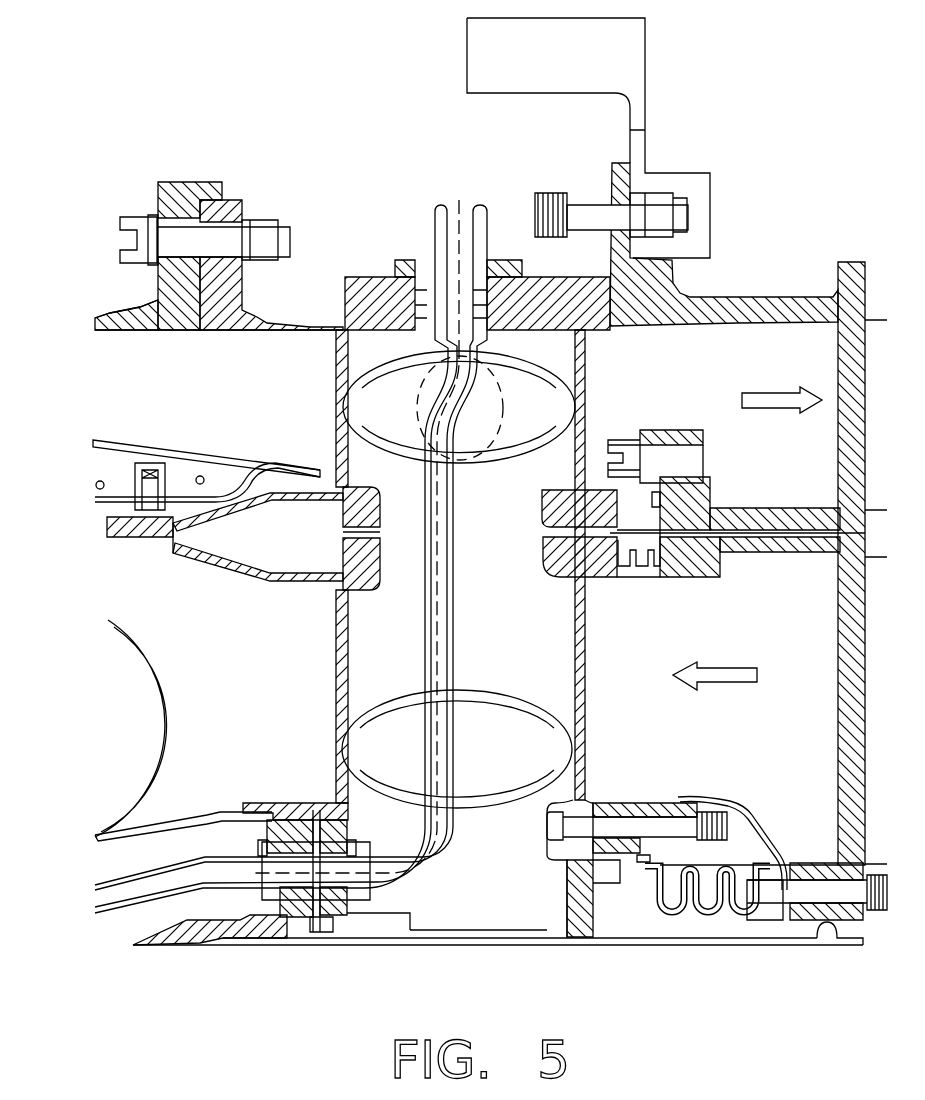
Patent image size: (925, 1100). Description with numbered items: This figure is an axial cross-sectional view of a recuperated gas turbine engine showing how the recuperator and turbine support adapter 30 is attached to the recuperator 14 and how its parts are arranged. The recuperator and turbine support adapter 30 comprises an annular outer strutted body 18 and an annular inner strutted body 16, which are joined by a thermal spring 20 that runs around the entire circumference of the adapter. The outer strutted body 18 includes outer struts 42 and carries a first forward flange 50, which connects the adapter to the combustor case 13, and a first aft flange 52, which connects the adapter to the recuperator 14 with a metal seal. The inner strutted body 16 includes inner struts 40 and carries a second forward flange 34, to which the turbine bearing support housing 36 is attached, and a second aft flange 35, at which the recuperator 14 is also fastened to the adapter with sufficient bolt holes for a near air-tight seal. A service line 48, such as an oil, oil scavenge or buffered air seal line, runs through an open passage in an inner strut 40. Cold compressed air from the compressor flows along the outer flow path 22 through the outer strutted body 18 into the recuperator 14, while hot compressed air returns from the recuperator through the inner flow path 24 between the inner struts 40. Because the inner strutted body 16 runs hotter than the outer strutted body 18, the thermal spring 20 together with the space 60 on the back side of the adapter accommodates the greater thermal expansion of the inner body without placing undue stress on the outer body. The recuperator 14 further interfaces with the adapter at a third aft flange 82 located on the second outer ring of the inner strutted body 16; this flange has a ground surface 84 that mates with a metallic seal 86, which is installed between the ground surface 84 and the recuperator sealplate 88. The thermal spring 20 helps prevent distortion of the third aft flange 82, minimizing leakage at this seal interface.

The combustor case 13 is at (136, 290).
The recuperator 14 is at (777, 296).
The inner strutted body 16 is at (338, 672).
The outer strutted body 18 is at (338, 350).
The thermal spring 20 is at (192, 558).
The outer flow path 22 is at (773, 387).
The inner flow path 24 is at (717, 668).
The recuperator and turbine support adapter 30 is at (380, 280).
The second forward flange 34 is at (327, 918).
The second aft flange 35 is at (560, 850).
The turbine bearing support housing 36 is at (297, 913).
The inner struts 40 is at (345, 717).
The outer struts 42 is at (333, 427).
The service line 48 is at (430, 868).
The first forward flange 50 is at (222, 283).
The first aft flange 52 is at (563, 266).
The space 60 is at (377, 533).
The third aft flange 82 is at (570, 578).
The ground surface 84 is at (628, 560).
The metallic seal 86 is at (640, 578).
The recuperator sealplate 88 is at (620, 508).